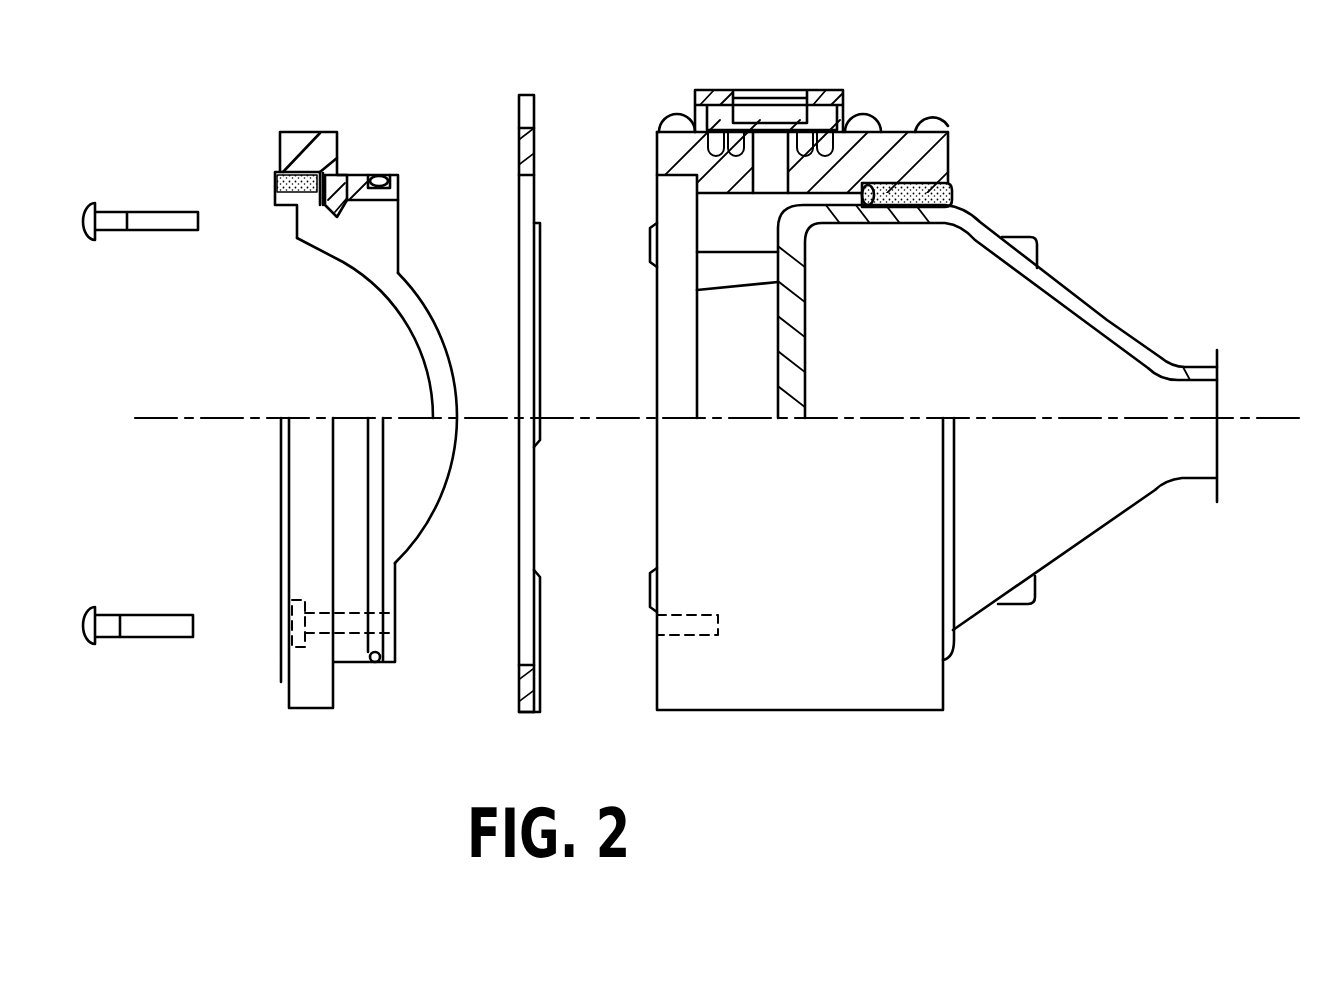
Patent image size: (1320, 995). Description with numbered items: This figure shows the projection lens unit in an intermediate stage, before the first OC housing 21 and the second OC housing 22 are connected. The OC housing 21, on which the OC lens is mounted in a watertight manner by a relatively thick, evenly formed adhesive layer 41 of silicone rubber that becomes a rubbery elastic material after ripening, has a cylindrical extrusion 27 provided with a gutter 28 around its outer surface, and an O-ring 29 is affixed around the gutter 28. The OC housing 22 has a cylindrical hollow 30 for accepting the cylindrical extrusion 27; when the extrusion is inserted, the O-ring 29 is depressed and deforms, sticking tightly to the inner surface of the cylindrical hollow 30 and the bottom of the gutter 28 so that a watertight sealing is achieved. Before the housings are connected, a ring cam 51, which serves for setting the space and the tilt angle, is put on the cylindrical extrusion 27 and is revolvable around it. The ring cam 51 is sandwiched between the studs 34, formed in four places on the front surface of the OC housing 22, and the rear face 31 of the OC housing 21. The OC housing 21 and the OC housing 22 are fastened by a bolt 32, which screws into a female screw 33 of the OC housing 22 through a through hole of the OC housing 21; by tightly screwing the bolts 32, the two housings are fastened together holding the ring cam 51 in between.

The first OC housing 21 is at (303, 131).
The second OC housing 22 is at (908, 131).
The cylindrical extrusion 27 is at (345, 177).
The gutter 28 is at (400, 193).
The O-ring 29 is at (388, 178).
The cylindrical hollow 30 is at (657, 187).
The rear face 31 is at (335, 685).
The bolt 32 is at (111, 209).
The female screw 33 is at (684, 612).
The stud 34 is at (646, 585).
The adhesive layer 41 is at (277, 192).
The ring cam 51 is at (532, 95).